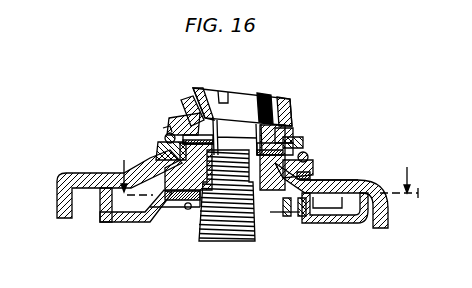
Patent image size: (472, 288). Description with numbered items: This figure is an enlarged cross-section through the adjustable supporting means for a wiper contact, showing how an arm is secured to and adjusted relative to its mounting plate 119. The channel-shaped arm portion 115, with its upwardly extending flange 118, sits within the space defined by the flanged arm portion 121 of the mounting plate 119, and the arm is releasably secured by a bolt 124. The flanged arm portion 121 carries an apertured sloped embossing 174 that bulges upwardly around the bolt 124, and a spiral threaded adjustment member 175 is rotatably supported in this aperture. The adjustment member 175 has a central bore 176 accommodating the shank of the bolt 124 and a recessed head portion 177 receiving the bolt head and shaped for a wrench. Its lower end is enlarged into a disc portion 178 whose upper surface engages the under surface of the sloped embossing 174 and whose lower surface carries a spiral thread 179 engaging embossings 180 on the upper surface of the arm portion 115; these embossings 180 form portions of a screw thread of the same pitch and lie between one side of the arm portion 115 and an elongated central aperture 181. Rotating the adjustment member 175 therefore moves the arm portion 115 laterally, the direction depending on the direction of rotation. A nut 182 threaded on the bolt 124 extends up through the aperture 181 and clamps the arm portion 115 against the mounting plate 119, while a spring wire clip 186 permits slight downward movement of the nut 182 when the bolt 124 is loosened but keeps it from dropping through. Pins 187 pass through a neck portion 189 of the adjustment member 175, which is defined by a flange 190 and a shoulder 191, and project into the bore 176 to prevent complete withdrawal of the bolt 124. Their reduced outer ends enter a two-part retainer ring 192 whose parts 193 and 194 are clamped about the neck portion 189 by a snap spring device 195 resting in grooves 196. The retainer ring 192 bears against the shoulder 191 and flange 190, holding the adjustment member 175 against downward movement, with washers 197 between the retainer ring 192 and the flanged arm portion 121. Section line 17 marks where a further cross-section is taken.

The section line 17— 17 is at (268, 178).
The arm portion 115 is at (119, 222).
The flange 118 is at (101, 198).
The mounting plate 119 is at (385, 180).
The flanged arm portion 121 is at (330, 183).
The bolt 124 is at (243, 98).
The sloped embossing 174 is at (147, 163).
The spiral threaded adjustment member 175 is at (193, 87).
The central bore 176 is at (288, 125).
The recessed head portion 177 is at (285, 97).
The disc portion 178 is at (180, 215).
The spiral thread 179 is at (303, 212).
The embossings 180 is at (312, 212).
The elongated central aperture 181 is at (180, 205).
The nut 182 is at (245, 241).
The spring wire clip 186 is at (195, 211).
The pins 187 is at (192, 112).
The neck portion 189 is at (160, 150).
The flange 190 is at (182, 116).
The shoulder 191 is at (313, 165).
The retainer ring 192 is at (180, 120).
The first part of retainer ring 193 is at (165, 138).
The second part of retainer ring 194 is at (305, 143).
The snap spring device 195 is at (310, 152).
The grooves 196 is at (297, 142).
The washers 197 is at (326, 172).